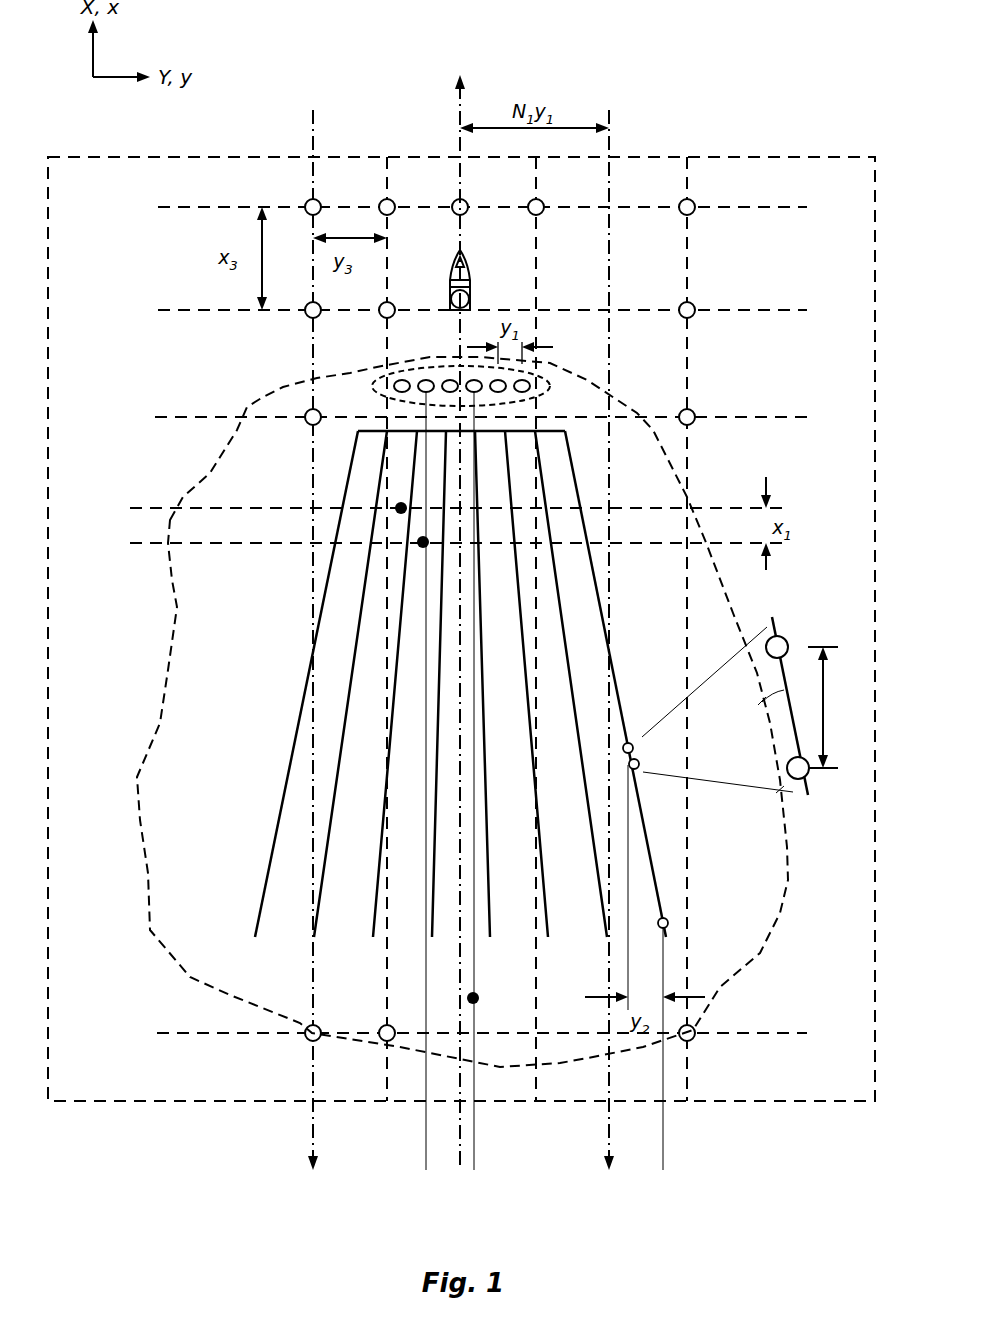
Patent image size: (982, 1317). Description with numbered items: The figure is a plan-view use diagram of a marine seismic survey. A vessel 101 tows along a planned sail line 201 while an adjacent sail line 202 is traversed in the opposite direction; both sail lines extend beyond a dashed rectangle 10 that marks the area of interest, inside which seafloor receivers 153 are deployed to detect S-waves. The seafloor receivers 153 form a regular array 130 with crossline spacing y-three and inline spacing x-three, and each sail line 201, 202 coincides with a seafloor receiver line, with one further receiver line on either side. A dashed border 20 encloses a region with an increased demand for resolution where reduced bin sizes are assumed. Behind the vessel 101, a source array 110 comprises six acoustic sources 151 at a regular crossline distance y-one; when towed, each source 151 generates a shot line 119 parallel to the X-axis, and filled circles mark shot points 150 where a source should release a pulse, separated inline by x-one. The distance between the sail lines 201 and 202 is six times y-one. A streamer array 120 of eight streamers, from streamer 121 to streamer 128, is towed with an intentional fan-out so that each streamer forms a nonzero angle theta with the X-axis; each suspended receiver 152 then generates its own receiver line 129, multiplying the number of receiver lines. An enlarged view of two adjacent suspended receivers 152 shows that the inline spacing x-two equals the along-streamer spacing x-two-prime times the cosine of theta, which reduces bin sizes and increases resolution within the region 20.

The dashed rectangle 10 is at (163, 155).
The dashed border 20 is at (165, 683).
The vessel 101 is at (463, 288).
The source array 110 is at (540, 393).
The shot line 119 is at (423, 1117).
The streamer array 120 is at (445, 684).
The streamer 121 is at (282, 798).
The streamer 128 is at (615, 677).
The receiver line 129 is at (663, 1118).
The array of seafloor receivers 130 is at (216, 375).
The shot point 150 is at (478, 993).
The acoustic source 151 is at (450, 380).
The suspended receiver 152 is at (773, 635).
The seafloor receiver 153 is at (692, 317).
The sail line 201 is at (457, 142).
The adjacent sail line 202 is at (610, 142).